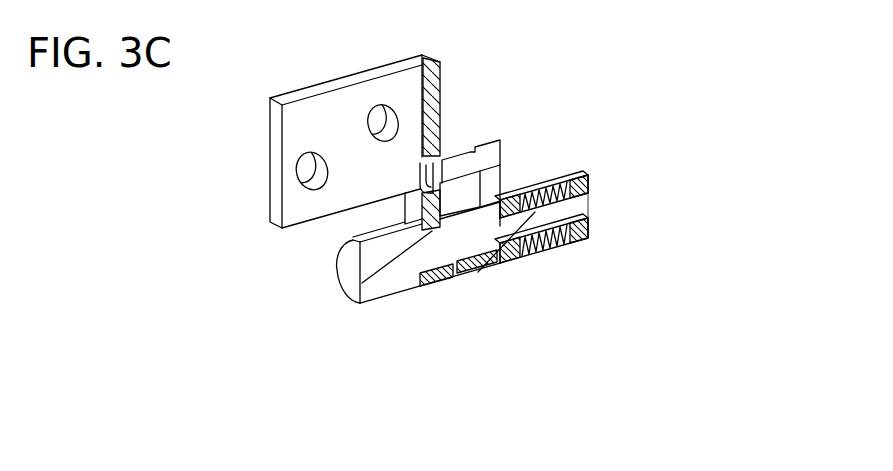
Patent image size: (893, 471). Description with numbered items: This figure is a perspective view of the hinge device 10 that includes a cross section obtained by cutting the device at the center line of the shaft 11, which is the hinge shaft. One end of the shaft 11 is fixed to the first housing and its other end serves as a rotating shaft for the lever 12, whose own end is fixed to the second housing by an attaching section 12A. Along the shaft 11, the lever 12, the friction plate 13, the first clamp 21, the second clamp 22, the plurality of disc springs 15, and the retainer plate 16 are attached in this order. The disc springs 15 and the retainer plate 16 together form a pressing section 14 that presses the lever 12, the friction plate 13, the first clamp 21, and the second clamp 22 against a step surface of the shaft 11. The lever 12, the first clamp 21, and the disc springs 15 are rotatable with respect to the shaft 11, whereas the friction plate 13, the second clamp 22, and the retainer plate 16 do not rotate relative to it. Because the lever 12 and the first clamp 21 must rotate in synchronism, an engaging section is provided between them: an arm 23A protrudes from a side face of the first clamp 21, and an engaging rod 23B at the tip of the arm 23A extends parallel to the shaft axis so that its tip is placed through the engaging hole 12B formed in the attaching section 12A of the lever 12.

The hinge device 10 is at (600, 52).
The shaft 11 is at (387, 288).
The lever 12 is at (438, 280).
The attaching section 12A is at (297, 113).
The engaging hole 12B is at (447, 157).
The friction plate 13 is at (462, 277).
The pressing section 14 is at (705, 133).
The disc springs 15 is at (547, 180).
The retainer plate 16 is at (590, 228).
The first clamp 21 is at (492, 262).
The second clamp 22 is at (512, 258).
The arm 23A is at (503, 165).
The engaging rod 23B is at (447, 150).